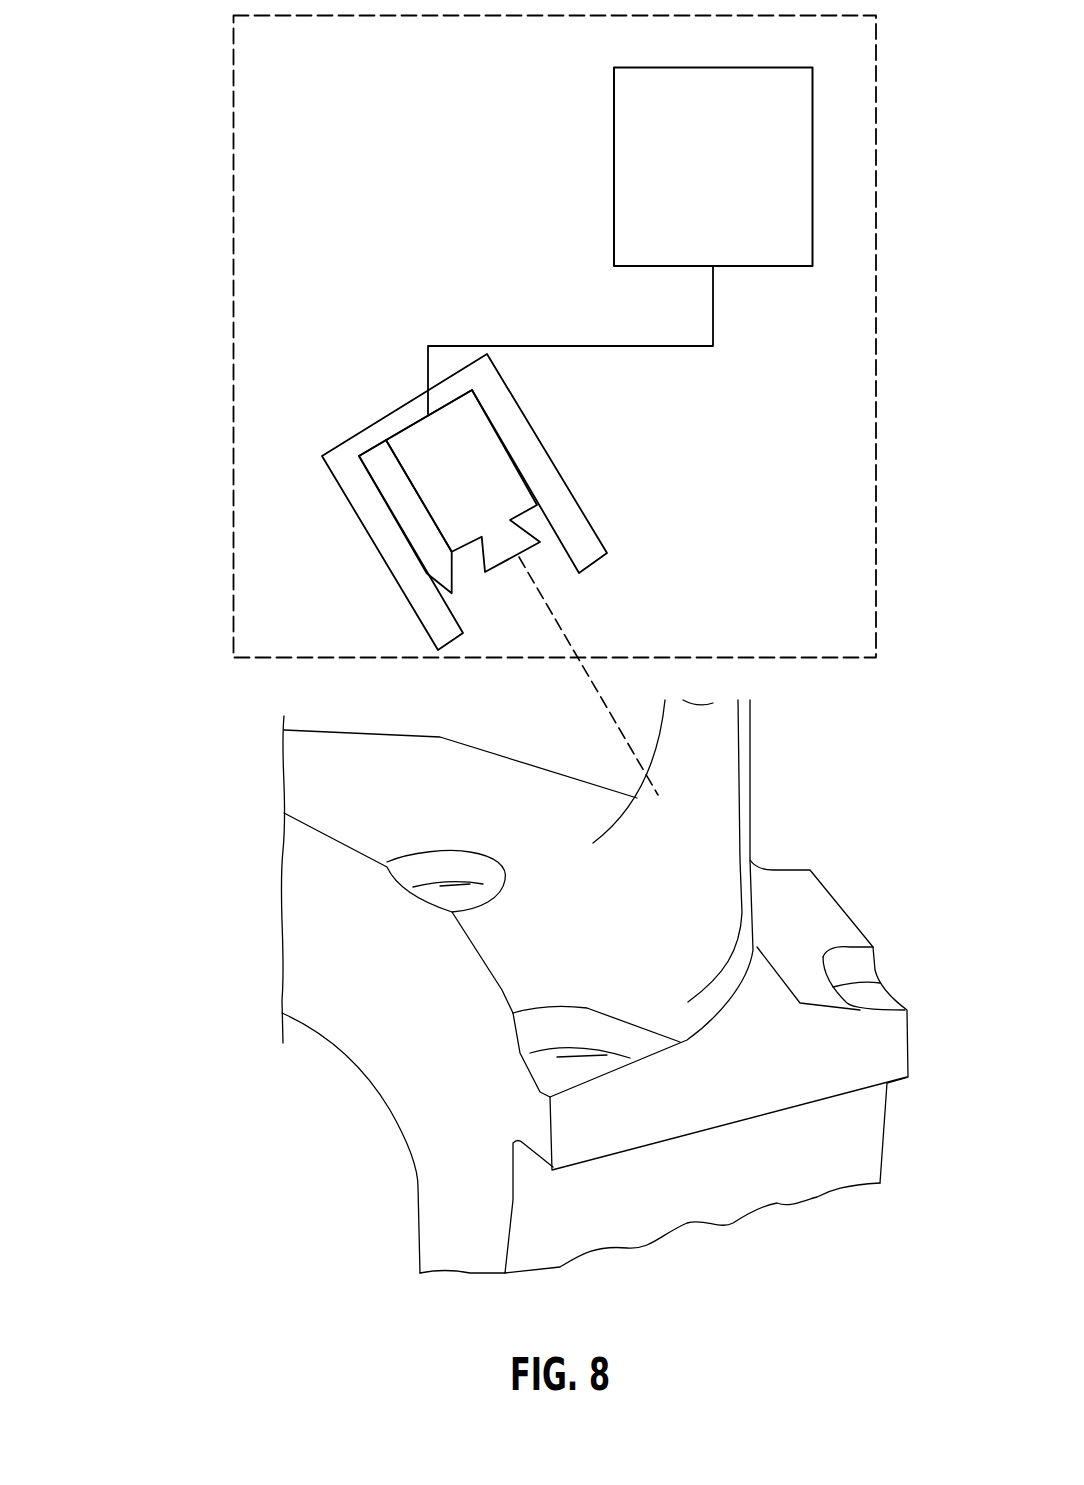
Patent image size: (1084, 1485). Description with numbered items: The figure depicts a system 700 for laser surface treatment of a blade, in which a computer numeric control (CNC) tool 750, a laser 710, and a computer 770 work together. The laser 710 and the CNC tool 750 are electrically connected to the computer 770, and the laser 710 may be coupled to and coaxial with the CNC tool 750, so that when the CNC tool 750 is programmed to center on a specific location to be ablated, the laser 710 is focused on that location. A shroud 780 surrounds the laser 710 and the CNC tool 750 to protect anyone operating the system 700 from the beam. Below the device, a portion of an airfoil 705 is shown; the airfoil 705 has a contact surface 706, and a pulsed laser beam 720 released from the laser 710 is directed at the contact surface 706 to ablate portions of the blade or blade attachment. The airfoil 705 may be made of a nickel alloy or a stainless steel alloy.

The system of laser surface treatment 700 is at (393, 208).
The airfoil 705 is at (708, 777).
The contact surface 706 is at (693, 830).
The laser 710 is at (415, 558).
The pulsed laser beam 720 is at (570, 645).
The CNC tool 750 is at (480, 444).
The computer 770 is at (731, 179).
The shroud 780 is at (365, 492).